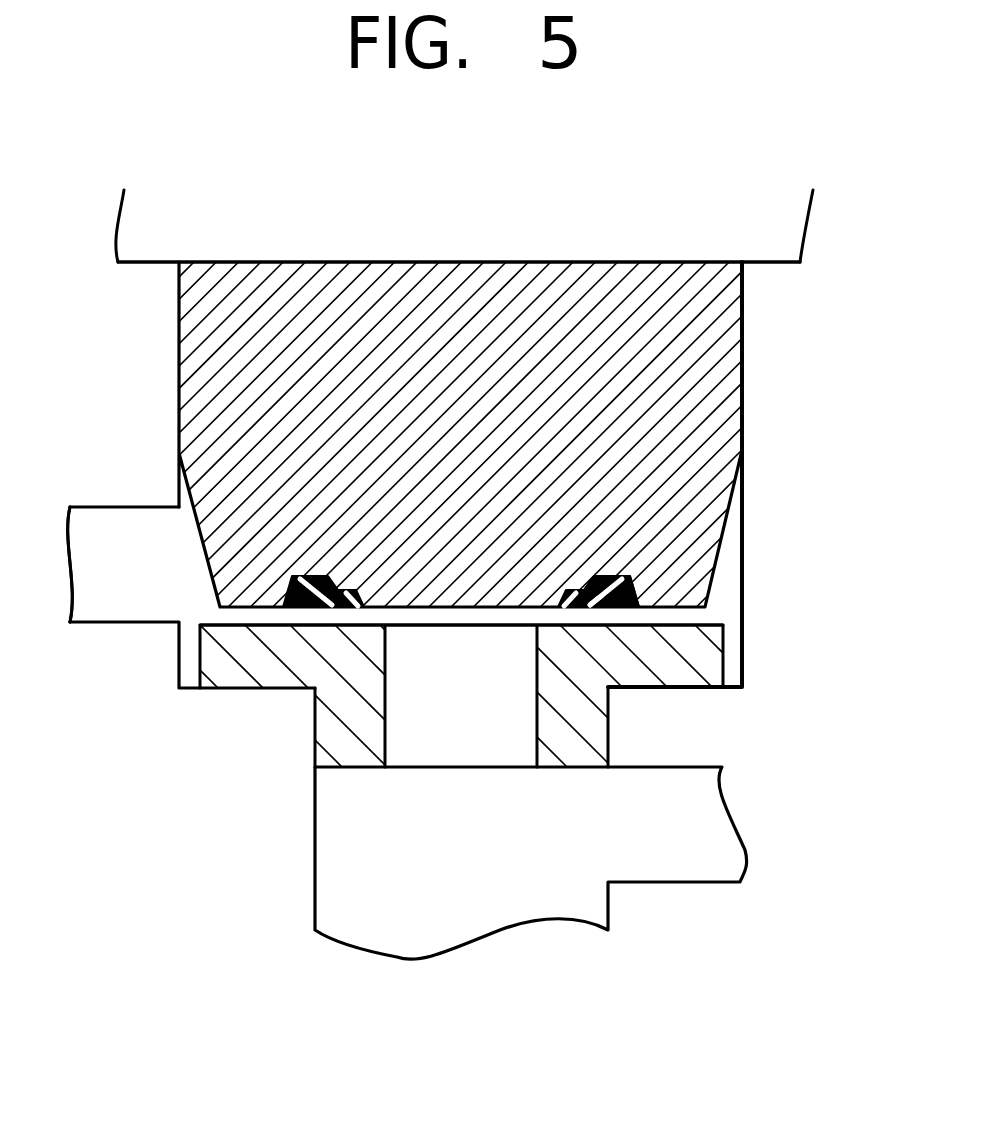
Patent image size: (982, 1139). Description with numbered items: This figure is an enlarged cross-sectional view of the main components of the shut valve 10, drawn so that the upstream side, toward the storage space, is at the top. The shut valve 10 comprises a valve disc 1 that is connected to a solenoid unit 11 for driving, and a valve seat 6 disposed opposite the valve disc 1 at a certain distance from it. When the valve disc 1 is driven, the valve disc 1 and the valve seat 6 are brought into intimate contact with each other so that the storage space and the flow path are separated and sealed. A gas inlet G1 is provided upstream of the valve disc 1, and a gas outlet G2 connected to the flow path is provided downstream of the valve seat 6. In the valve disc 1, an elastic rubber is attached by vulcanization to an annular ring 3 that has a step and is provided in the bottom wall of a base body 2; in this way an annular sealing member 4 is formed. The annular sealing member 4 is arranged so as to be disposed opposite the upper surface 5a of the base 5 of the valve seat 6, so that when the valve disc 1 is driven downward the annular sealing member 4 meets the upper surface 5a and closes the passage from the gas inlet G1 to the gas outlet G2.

The valve disc 1 is at (780, 320).
The base body 2 is at (730, 427).
The annular ring 3 is at (585, 592).
The annular sealing member 4 is at (622, 595).
The base 5 is at (713, 641).
The upper surface 5a is at (703, 623).
The valve seat 6 is at (625, 717).
The shut valve 10 is at (106, 376).
The solenoid unit 11 is at (788, 223).
The gas inlet G1 is at (103, 610).
The gas outlet G2 is at (715, 833).